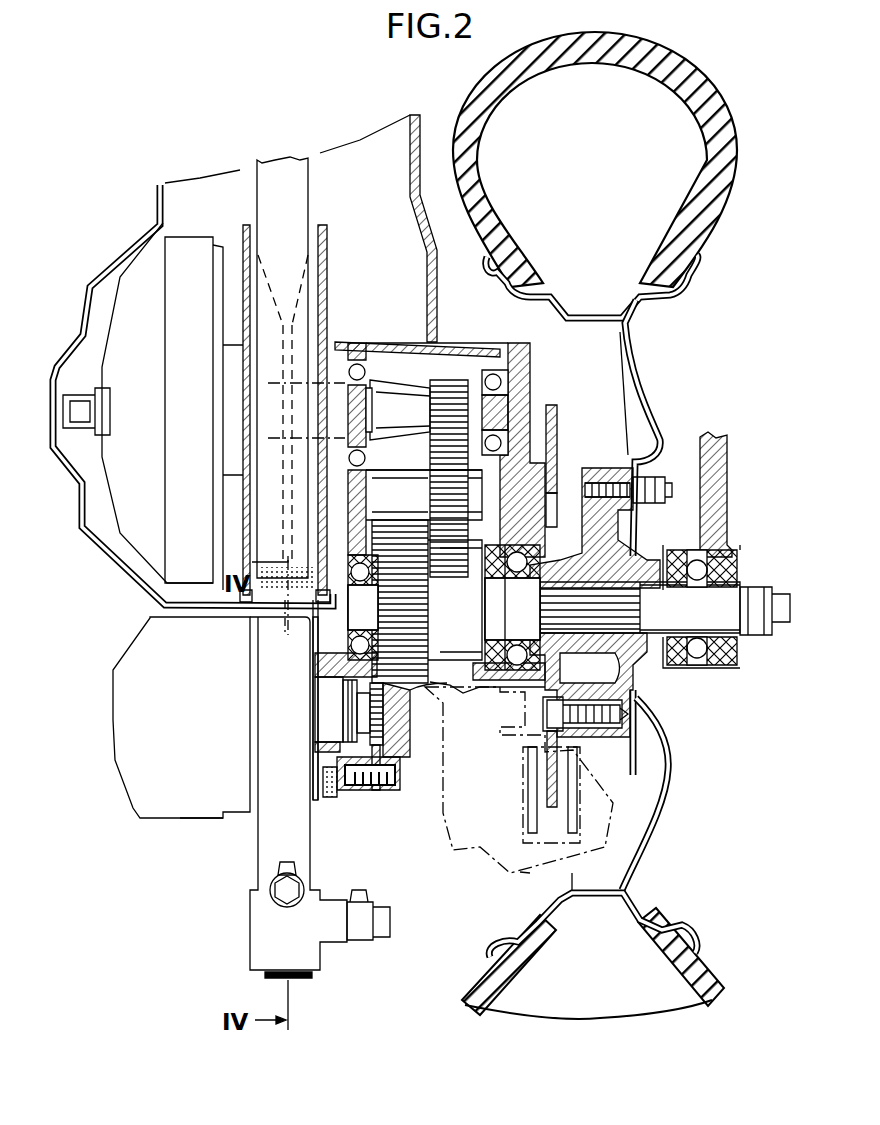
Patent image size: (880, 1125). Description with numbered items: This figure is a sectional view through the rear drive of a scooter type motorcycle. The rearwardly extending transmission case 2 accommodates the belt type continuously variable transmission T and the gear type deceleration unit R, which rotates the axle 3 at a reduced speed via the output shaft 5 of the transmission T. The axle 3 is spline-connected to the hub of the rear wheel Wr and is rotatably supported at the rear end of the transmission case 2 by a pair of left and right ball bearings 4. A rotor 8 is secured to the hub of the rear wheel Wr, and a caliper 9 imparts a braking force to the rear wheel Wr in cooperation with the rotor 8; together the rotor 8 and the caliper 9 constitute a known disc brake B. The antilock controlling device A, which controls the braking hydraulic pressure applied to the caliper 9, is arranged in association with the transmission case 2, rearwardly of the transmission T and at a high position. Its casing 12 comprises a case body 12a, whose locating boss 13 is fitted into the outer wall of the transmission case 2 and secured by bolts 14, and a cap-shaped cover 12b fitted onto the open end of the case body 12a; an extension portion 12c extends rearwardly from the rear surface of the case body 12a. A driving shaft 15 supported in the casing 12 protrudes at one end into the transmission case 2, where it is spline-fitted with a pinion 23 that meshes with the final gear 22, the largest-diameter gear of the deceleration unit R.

The transmission case 2 is at (128, 258).
The axle 3 is at (734, 580).
The ball bearings 4 is at (360, 580).
The output shaft 5 is at (400, 400).
The rotor 8 is at (548, 770).
The caliper 9 is at (476, 852).
The casing 12 is at (251, 789).
The case body 12a is at (280, 774).
The cap-shaped cover 12b is at (200, 774).
The extension portion 12c is at (262, 914).
The locating boss 13 is at (314, 690).
The bolts 14 is at (334, 797).
The driving shaft 15 is at (350, 710).
The final gear 22 is at (420, 660).
The pinion 23 is at (400, 760).
The antilock controlling device A is at (193, 838).
The disc brake B is at (518, 881).
The gear type deceleration unit R is at (457, 370).
The belt type continuously variable transmission T is at (289, 148).
The rear wheel Wr is at (737, 190).